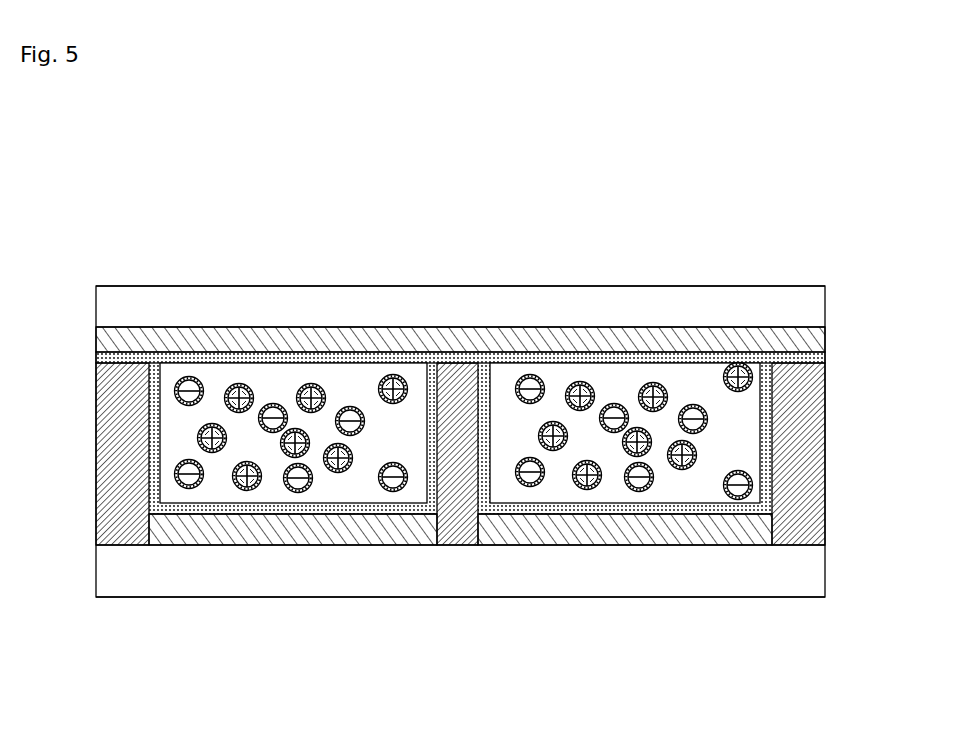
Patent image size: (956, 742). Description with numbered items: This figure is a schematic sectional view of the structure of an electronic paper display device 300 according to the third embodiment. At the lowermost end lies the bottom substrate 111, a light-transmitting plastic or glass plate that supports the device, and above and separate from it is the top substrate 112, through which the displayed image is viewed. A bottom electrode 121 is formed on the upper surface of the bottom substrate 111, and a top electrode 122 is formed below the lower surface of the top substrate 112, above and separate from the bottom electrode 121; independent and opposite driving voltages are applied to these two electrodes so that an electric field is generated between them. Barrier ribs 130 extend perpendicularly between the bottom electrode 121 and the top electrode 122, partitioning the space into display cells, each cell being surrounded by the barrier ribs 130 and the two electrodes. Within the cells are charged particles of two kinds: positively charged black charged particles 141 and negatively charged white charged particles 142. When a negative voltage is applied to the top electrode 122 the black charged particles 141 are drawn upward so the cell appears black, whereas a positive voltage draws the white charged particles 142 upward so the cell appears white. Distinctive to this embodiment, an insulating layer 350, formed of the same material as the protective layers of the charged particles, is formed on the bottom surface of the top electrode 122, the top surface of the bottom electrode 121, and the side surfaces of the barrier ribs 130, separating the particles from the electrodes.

The electronic display device 300 is at (92, 232).
The bottom substrate 111 is at (806, 569).
The top substrate 112 is at (808, 305).
The bottom electrode 121 is at (720, 537).
The top electrode 122 is at (805, 334).
The barrier ribs 130 is at (808, 516).
The black charged particles 141 is at (754, 375).
The white charged particles 142 is at (746, 483).
The insulating layer 350 is at (806, 358).